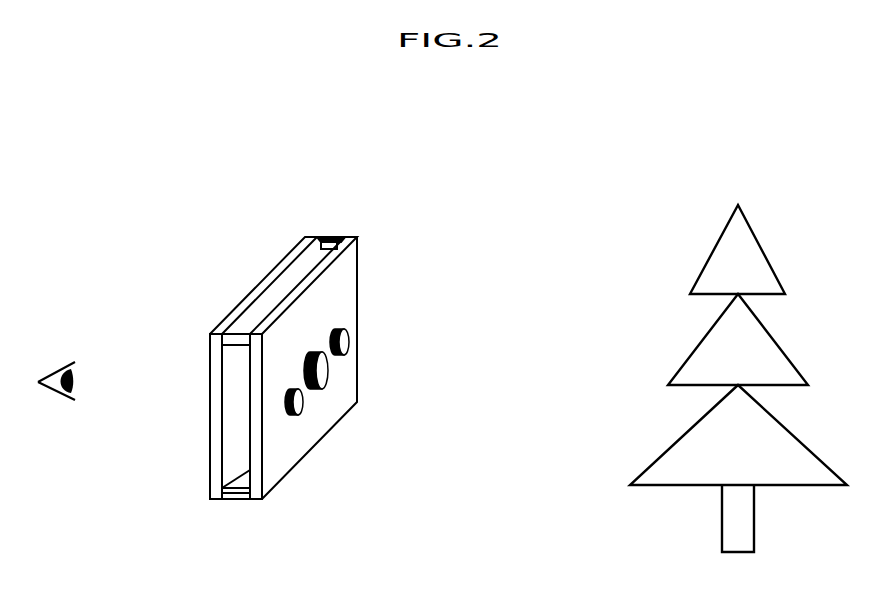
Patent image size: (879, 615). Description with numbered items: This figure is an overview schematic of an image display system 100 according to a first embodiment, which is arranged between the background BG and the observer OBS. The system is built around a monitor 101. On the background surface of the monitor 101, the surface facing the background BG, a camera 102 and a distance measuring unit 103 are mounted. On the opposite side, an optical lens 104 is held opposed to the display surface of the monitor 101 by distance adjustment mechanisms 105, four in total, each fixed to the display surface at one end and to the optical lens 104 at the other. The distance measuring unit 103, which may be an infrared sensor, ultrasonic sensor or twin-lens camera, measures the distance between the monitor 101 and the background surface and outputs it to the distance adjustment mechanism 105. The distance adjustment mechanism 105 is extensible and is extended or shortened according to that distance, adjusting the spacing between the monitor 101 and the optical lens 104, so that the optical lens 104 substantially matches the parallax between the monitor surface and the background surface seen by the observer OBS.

The image display system 100 is at (527, 98).
The monitor 101 is at (256, 473).
The camera 102 is at (323, 371).
The distance measuring unit 103 is at (446, 452).
The optical lens 104 is at (213, 393).
The distance adjustment mechanism 105 is at (238, 545).
The observer OBS is at (53, 372).
The background BG is at (762, 193).